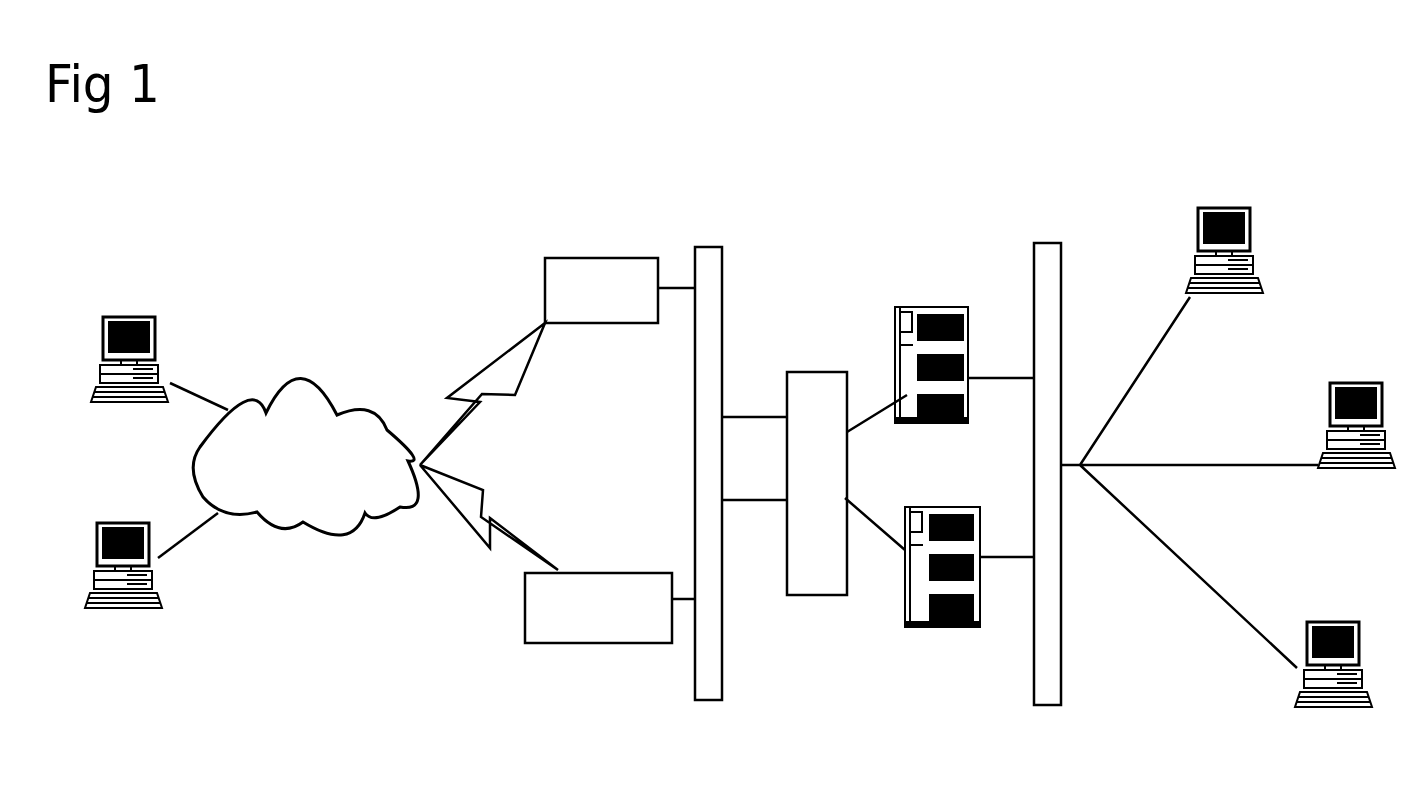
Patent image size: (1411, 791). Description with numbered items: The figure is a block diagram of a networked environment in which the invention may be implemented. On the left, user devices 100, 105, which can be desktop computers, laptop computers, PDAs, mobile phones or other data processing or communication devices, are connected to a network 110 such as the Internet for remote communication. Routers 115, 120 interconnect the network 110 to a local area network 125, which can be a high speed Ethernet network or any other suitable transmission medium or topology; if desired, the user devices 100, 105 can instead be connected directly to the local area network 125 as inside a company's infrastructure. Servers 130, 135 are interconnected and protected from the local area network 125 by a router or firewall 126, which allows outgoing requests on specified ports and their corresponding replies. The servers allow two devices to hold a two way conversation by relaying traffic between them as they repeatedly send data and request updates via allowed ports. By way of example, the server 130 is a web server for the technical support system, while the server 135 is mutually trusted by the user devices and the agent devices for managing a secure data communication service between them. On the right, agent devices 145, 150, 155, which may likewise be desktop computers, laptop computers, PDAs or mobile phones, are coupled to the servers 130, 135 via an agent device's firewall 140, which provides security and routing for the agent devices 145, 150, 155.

The user device 100 is at (98, 358).
The user device 105 is at (90, 572).
The network 110 is at (267, 450).
The router 115 is at (545, 292).
The router 120 is at (525, 615).
The local area network 125 is at (690, 250).
The router or firewall 126 is at (808, 372).
The server 130 is at (920, 308).
The server 135 is at (933, 632).
The agent device's firewall 140 is at (1034, 250).
The agent device 145 is at (1193, 215).
The agent device 150 is at (1327, 415).
The agent device 155 is at (1308, 615).